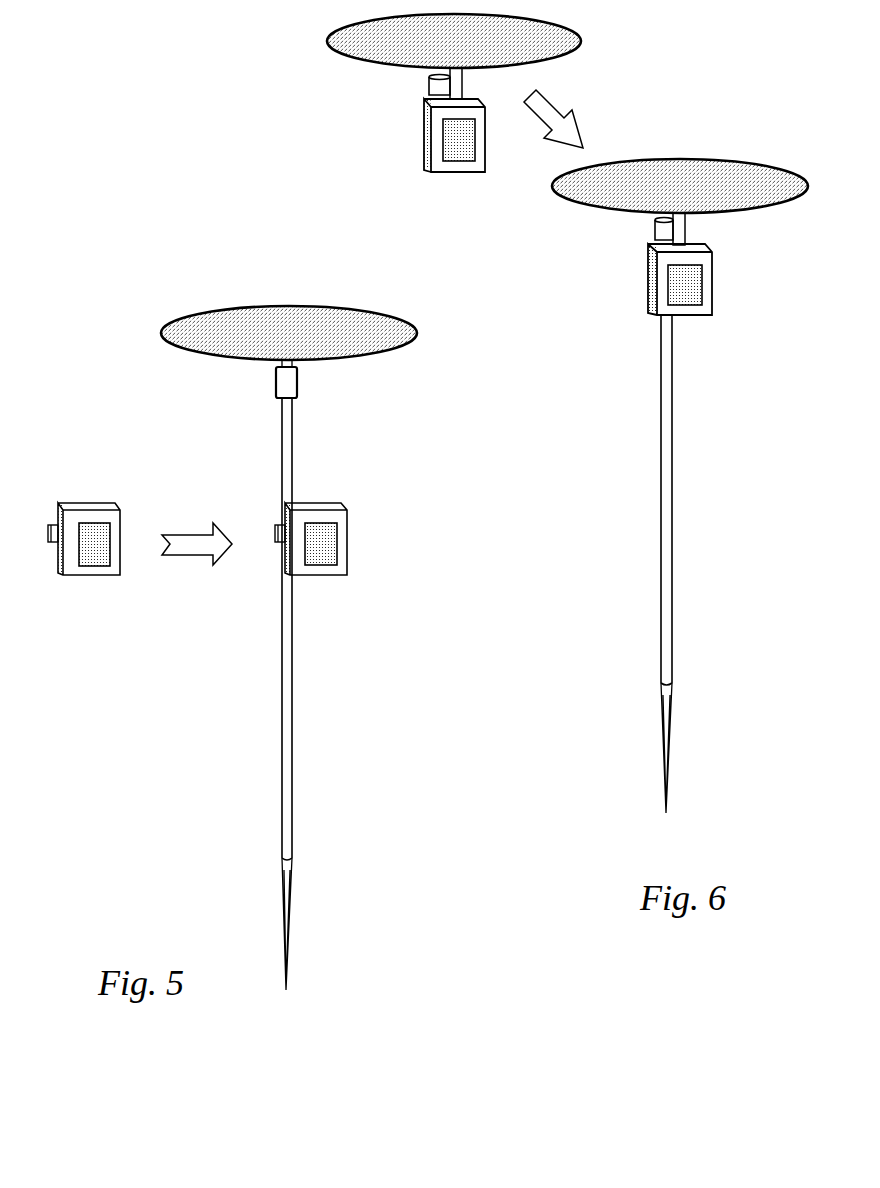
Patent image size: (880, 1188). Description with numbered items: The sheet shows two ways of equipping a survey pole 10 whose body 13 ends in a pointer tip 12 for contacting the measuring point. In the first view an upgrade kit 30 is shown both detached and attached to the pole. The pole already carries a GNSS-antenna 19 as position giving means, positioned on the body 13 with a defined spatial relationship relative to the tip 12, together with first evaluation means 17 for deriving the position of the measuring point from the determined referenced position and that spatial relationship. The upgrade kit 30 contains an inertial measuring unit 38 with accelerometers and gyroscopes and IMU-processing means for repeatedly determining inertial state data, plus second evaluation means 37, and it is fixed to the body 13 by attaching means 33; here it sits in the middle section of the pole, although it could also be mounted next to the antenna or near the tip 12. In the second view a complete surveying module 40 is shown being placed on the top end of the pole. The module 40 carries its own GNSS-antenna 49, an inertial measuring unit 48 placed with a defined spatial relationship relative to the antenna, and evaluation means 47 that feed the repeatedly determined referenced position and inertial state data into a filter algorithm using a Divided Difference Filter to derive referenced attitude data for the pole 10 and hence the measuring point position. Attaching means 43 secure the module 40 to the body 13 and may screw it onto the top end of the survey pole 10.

In FIG. 5, the survey pole 10 is at (250, 652).
In FIG. 6, the survey pole 10 is at (638, 437).
In FIG. 5, the pointer tip 12 is at (288, 950).
In FIG. 6, the pointer tip 12 is at (667, 773).
In FIG. 5, the body 13 is at (286, 683).
In FIG. 6, the body 13 is at (663, 523).
In FIG. 5, the first evaluation means 17 is at (287, 383).
In FIG. 5, the GNSS-antenna 19 is at (242, 340).
In FIG. 5, the upgrade kit 30 is at (205, 548).
In FIG. 5, the attaching means 33 is at (53, 540).
In FIG. 5, the second evaluation means 37 is at (88, 517).
In FIG. 5, the inertial measuring unit 38 is at (97, 555).
In FIG. 6, the surveying module 40 is at (550, 180).
In FIG. 6, the attaching means 43 is at (445, 83).
In FIG. 6, the evaluation means 47 is at (433, 115).
In FIG. 6, the inertial measuring unit 48 is at (467, 143).
In FIG. 6, the GNSS-antenna 49 is at (367, 43).